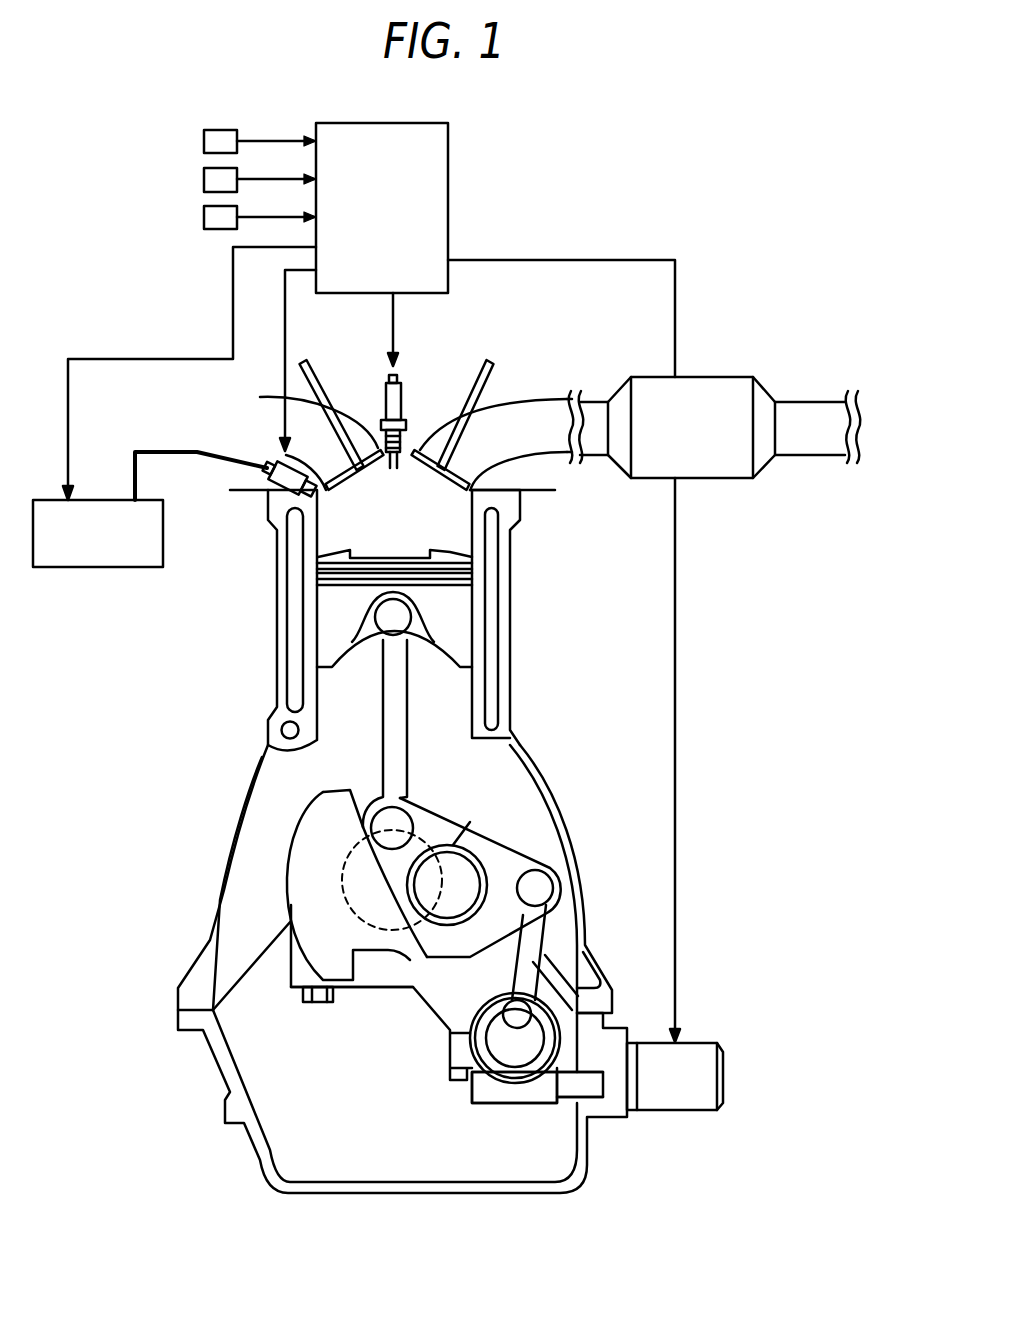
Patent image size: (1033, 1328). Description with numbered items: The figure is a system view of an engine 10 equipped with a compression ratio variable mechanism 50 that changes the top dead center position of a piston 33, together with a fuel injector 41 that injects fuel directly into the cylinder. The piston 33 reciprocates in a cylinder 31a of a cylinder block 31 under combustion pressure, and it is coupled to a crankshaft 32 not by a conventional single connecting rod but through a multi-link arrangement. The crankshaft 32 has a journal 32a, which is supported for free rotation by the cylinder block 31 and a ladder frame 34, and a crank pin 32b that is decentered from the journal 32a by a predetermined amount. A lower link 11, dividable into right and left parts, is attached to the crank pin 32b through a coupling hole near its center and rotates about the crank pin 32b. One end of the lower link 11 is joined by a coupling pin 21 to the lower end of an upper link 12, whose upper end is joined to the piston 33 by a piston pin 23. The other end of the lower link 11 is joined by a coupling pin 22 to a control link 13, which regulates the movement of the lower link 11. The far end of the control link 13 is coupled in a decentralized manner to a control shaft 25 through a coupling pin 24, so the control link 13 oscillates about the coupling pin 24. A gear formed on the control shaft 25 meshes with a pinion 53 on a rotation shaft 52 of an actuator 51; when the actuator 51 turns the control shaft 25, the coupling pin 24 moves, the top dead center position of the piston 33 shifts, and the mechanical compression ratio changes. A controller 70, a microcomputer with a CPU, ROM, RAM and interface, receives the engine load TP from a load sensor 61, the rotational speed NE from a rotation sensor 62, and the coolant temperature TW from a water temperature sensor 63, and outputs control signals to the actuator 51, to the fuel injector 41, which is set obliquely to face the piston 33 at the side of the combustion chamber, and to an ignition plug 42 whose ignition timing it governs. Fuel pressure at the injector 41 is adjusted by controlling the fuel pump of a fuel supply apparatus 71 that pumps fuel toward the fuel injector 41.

The engine 10 is at (126, 282).
The lower link 11 is at (487, 842).
The upper link 12 is at (408, 762).
The control link 13 is at (533, 937).
The coupling pin 21 is at (390, 828).
The coupling pin 22 is at (537, 885).
The piston pin 23 is at (388, 618).
The coupling pin 24 is at (507, 1018).
The control shaft 25 is at (510, 1060).
The cylinder block 31 is at (513, 703).
The cylinder 31a is at (325, 546).
The crankshaft 32 is at (298, 935).
The journal 32a is at (343, 875).
The crank pin 32b is at (440, 890).
The piston 33 is at (463, 645).
The ladder frame 34 is at (360, 985).
The fuel injector 41 is at (268, 464).
The ignition plug 42 is at (400, 410).
The compression ratio variable mechanism 50 is at (703, 981).
The actuator 51 is at (680, 1104).
The rotation shaft 52 is at (563, 1097).
The pinion 53 is at (537, 1094).
The load sensor 61 is at (204, 140).
The rotation sensor 62 is at (204, 185).
The water temperature sensor 63 is at (204, 222).
The controller 70 is at (448, 142).
The fuel supply apparatus 71 is at (128, 568).